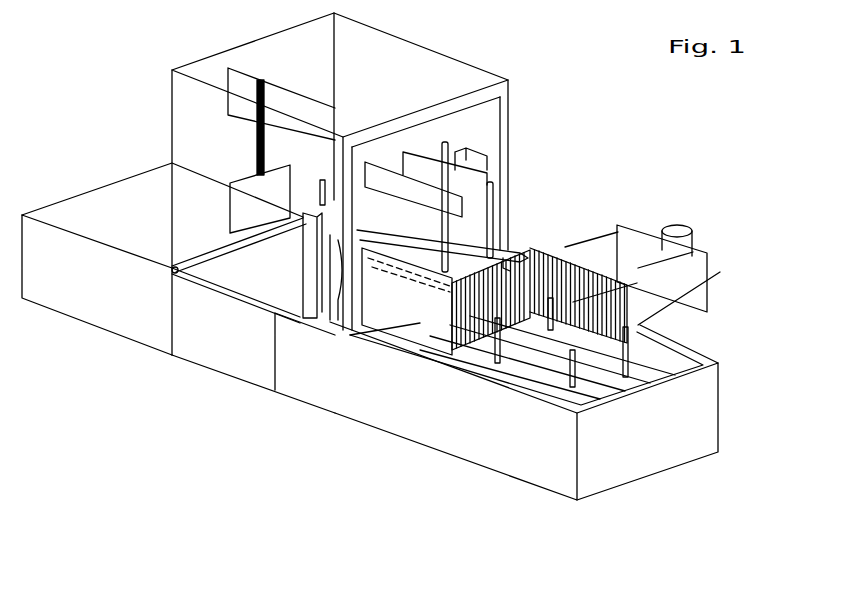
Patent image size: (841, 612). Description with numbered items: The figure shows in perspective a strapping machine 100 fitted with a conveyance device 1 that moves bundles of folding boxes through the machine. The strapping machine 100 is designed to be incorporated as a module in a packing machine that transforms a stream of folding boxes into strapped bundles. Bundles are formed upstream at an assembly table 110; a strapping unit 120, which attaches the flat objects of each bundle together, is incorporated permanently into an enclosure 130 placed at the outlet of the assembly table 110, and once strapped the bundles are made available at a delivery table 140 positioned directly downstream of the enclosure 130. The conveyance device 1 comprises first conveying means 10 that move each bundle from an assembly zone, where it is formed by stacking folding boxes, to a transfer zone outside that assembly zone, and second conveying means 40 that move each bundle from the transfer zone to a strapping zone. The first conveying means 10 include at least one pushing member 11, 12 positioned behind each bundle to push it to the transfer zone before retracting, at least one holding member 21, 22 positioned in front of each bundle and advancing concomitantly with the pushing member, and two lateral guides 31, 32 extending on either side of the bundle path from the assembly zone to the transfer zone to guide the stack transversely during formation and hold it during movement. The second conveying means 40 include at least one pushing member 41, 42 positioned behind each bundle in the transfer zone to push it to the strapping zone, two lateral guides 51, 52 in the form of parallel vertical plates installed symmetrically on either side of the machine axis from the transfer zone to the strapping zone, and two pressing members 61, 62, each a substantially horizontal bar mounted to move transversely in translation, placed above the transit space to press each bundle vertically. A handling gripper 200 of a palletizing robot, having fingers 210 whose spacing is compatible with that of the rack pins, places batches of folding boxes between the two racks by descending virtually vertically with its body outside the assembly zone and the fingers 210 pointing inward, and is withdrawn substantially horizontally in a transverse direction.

The conveyance device 1 is at (744, 364).
The first conveying means 10 is at (667, 337).
The pushing member 11 is at (613, 403).
The pushing member 12 is at (615, 385).
The holding member 21 is at (495, 316).
The holding member 22 is at (546, 302).
The lateral guide 31 is at (560, 375).
The lateral guide 32 is at (640, 310).
The second conveying means 40 is at (492, 150).
The pushing member 41 is at (493, 215).
The pushing member 42 is at (452, 220).
The lateral guide 51 is at (420, 323).
The lateral guide 52 is at (505, 248).
The pressing member 61 is at (395, 270).
The pressing member 62 is at (505, 255).
The strapping machine 100 is at (704, 494).
The assembly table 110 is at (414, 457).
The strapping unit 120 is at (303, 374).
The enclosure 130 is at (200, 373).
The delivery table 140 is at (74, 187).
The handling gripper 200 is at (659, 225).
The fingers 210 is at (595, 238).